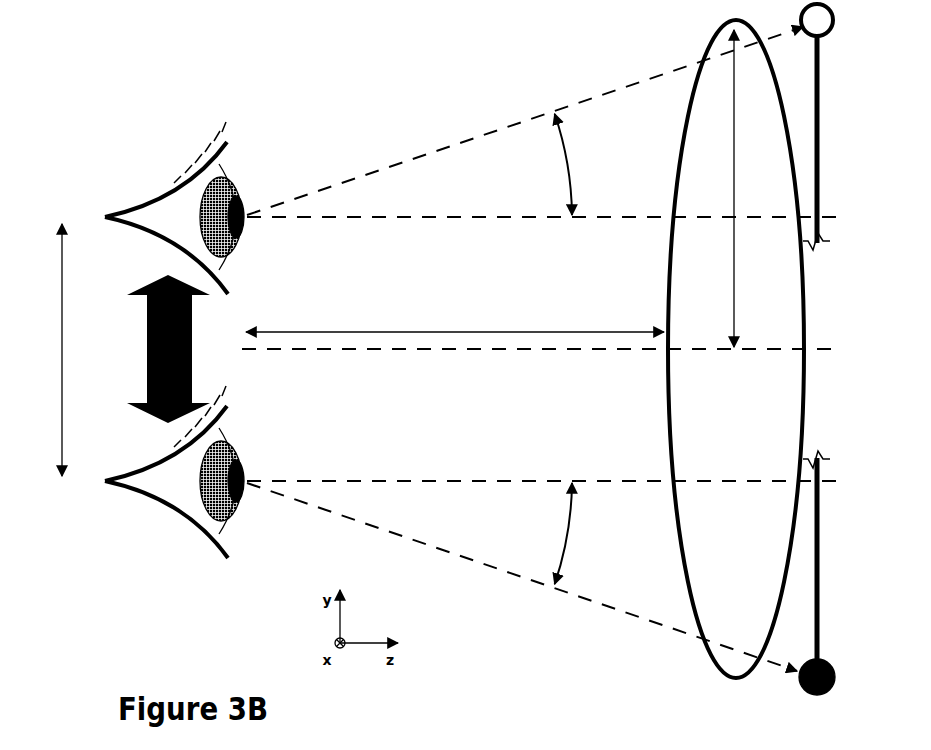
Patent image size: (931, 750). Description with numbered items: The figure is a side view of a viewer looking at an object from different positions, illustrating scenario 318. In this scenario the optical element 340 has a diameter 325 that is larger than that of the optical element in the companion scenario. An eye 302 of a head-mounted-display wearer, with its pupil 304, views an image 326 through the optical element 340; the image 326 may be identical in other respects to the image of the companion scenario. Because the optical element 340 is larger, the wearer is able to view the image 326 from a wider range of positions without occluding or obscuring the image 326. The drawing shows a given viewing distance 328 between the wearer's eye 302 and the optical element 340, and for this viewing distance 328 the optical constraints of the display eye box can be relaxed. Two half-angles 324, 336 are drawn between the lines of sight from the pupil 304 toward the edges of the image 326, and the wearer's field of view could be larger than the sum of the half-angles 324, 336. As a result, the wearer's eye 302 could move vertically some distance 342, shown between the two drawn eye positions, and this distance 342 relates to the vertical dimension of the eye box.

The eye 302 is at (222, 168).
The pupil 304 is at (238, 208).
The scenario 318 is at (146, 134).
The half-angle 324 is at (574, 162).
The diameter 325 is at (736, 298).
The image 326 is at (818, 128).
The viewing distance 328 is at (389, 331).
The half-angle 336 is at (576, 540).
The optical element 340 is at (802, 408).
The distance 342 is at (65, 333).